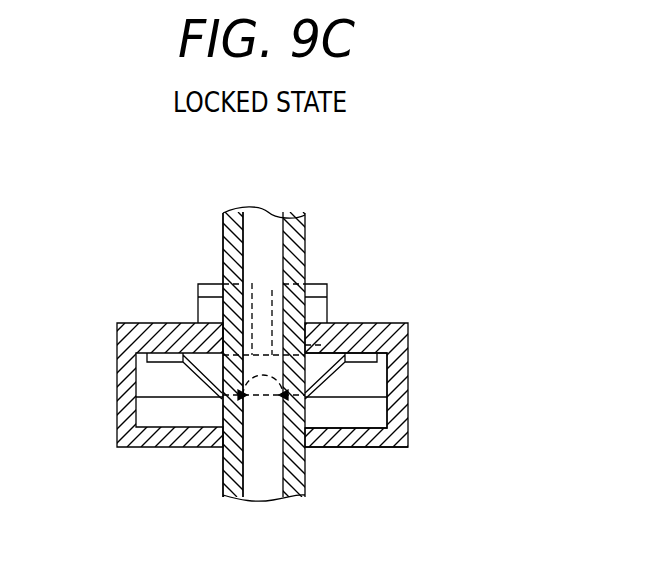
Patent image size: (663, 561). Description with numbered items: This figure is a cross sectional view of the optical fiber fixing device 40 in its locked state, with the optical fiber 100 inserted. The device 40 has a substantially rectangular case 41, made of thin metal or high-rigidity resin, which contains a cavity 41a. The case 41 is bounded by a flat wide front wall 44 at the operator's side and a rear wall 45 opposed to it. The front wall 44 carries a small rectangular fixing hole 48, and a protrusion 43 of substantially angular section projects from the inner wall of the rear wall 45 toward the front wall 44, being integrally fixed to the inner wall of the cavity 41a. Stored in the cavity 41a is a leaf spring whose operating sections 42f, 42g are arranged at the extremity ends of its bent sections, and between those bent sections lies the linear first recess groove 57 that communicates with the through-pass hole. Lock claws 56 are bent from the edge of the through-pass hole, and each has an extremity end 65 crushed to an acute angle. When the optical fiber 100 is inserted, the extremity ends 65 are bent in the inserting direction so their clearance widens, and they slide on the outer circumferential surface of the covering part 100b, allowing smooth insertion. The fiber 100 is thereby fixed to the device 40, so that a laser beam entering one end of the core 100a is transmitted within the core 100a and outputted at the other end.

The optical fiber 100 is at (222, 470).
The core 100a is at (270, 222).
The covering part 100b is at (222, 232).
The first recess groove 57 is at (272, 290).
The operating section 42f is at (213, 297).
The operating section 42g is at (313, 300).
The front wall 44 is at (147, 323).
The case 41 is at (408, 335).
The cavity 41a is at (368, 377).
The rear wall 45 is at (377, 448).
The optical fiber fixing device 40 is at (415, 302).
The lock claw 56 is at (190, 375).
The extremity end 65 is at (220, 398).
The fixing hole 48 is at (325, 345).
The protrusion 43 is at (263, 385).